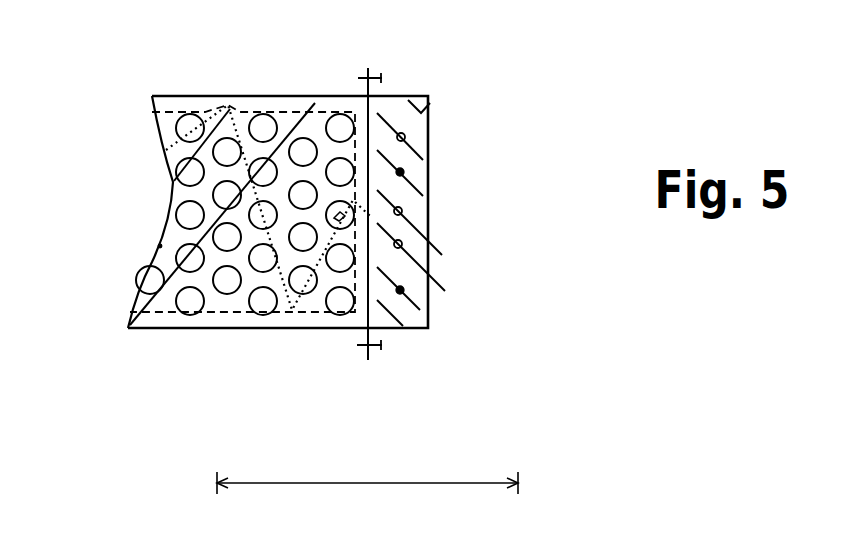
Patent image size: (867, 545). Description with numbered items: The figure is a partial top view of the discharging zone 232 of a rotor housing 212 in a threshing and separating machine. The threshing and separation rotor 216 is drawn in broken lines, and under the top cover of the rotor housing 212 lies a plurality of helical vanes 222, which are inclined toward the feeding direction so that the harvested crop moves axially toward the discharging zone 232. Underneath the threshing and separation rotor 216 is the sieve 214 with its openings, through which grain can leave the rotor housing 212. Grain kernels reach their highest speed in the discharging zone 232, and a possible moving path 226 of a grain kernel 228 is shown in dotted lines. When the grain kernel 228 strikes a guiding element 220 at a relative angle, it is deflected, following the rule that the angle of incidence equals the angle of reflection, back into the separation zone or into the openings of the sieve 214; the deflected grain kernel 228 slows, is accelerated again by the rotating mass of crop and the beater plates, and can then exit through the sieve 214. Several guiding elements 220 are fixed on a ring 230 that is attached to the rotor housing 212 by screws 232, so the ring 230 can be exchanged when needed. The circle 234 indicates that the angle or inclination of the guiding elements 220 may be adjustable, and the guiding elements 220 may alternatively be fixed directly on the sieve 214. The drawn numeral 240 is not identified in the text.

The rotor housing 212 is at (203, 92).
The sieve 214 is at (181, 237).
The threshing and separation rotor 216 is at (287, 93).
The guiding element 220 is at (402, 232).
The helical vanes 222 is at (173, 200).
The moving path 226 is at (352, 338).
The grain kernel 228 is at (342, 215).
The ring 230 is at (428, 328).
The discharging zone 232 is at (413, 58).
The circle 234 is at (405, 131).
The hole 240 is at (262, 300).